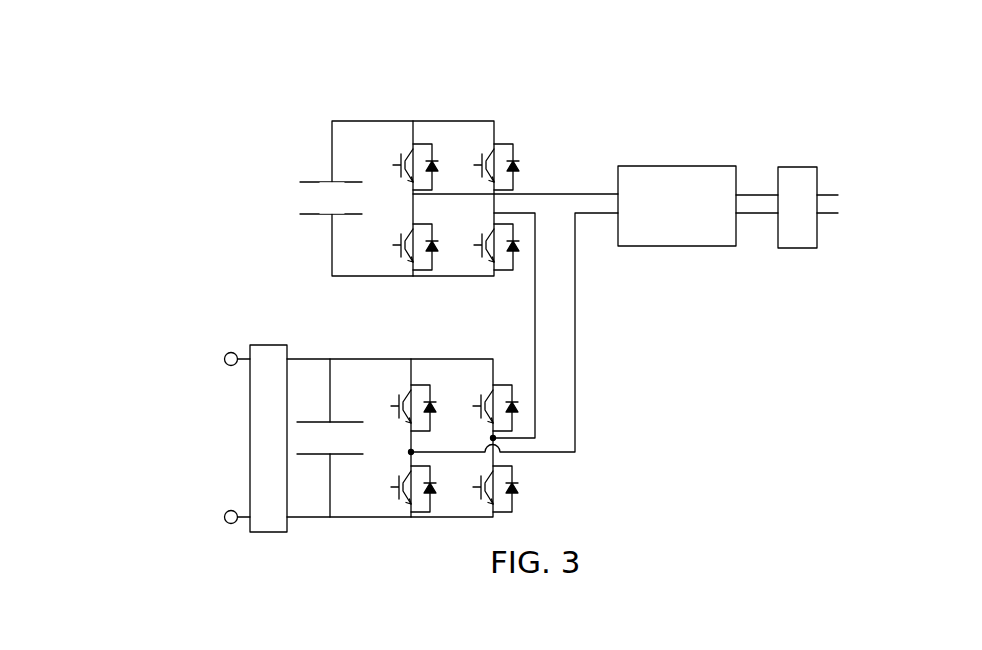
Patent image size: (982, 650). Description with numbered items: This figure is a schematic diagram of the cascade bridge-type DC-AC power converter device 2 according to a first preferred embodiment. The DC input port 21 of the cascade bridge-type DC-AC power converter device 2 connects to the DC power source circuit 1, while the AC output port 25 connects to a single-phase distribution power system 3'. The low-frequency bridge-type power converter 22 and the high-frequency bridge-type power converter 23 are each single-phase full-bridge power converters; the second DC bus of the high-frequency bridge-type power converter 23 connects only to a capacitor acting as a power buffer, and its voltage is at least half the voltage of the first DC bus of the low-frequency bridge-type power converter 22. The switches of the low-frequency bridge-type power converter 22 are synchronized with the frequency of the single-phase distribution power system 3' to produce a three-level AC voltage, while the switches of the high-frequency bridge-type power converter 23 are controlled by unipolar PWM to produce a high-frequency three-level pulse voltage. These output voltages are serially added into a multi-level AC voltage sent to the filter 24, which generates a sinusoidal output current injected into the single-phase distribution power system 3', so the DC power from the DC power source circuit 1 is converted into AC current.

The DC power source circuit 1 is at (153, 388).
The cascade bridge-type DC-AC power converter device 2 is at (511, 275).
The DC input port 21 is at (267, 345).
The low-frequency bridge-type power converter 22 is at (443, 359).
The high-frequency bridge-type power converter 23 is at (452, 120).
The filter 24 is at (683, 165).
The AC output port 25 is at (799, 167).
The single-phase distribution power system 3' is at (889, 158).